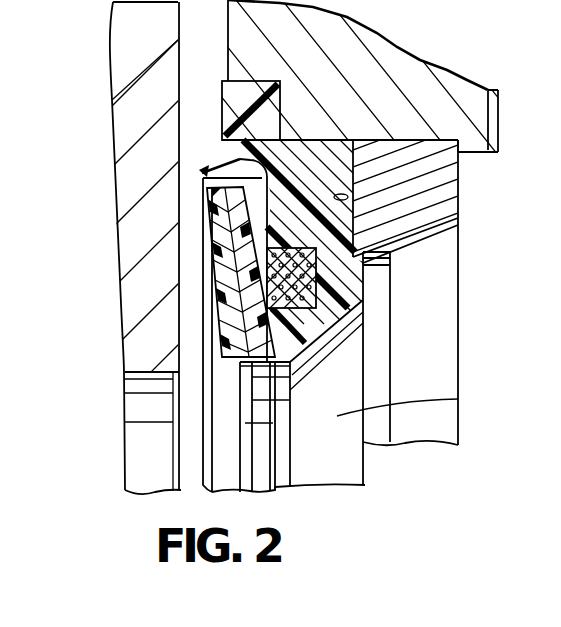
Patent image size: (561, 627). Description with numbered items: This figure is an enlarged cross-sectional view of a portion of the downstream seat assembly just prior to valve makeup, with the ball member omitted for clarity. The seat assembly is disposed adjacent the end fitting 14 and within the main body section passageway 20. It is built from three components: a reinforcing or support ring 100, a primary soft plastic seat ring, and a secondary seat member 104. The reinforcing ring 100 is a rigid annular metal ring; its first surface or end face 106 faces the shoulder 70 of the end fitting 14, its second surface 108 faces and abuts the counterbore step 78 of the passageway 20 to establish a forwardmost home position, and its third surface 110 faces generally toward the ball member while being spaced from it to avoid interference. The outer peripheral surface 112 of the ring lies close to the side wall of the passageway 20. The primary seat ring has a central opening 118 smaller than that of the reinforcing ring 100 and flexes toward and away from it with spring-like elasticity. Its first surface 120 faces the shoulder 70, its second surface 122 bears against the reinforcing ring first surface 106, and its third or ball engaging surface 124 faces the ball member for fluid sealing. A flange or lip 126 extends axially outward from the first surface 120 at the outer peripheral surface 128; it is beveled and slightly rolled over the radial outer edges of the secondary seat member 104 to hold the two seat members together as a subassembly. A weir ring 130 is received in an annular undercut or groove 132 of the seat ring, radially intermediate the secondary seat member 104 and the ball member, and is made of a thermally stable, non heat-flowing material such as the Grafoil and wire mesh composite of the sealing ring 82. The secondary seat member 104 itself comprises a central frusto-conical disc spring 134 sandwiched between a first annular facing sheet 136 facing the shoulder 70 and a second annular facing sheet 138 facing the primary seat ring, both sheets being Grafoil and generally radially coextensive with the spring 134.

The end fitting 14 is at (133, 46).
The shoulder 70 is at (158, 120).
The main body section passageway 20 is at (370, 143).
The sealing ring 82 is at (242, 100).
The outer peripheral surface 112 is at (498, 98).
The counterbore end wall or step 78 is at (478, 153).
The outer peripheral surface 128 is at (300, 140).
The flange or lip 126 is at (222, 155).
The first surface 120 is at (203, 173).
The secondary seat member 104 is at (187, 224).
The frusto-conical disc spring 134 is at (228, 256).
The first annular facing sheet 136 is at (250, 303).
The second annular facing sheet 138 is at (262, 298).
The weir ring 130 is at (338, 304).
The annular undercut or groove 132 is at (316, 262).
The first surface or end face 106 is at (347, 194).
The reinforcing or support ring 100 is at (430, 196).
The second surface 108 is at (445, 173).
The second surface 122 is at (400, 227).
The third surface 110 is at (448, 353).
The third surface or ball engaging surface 124 is at (458, 399).
The central opening 118 is at (282, 470).